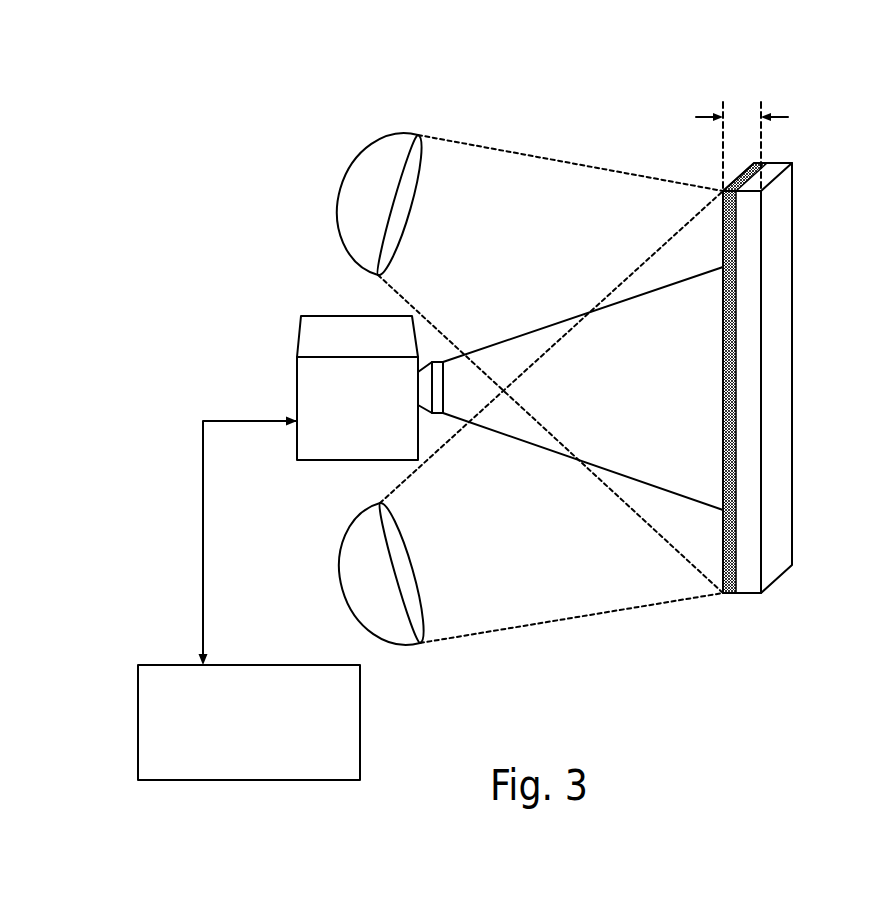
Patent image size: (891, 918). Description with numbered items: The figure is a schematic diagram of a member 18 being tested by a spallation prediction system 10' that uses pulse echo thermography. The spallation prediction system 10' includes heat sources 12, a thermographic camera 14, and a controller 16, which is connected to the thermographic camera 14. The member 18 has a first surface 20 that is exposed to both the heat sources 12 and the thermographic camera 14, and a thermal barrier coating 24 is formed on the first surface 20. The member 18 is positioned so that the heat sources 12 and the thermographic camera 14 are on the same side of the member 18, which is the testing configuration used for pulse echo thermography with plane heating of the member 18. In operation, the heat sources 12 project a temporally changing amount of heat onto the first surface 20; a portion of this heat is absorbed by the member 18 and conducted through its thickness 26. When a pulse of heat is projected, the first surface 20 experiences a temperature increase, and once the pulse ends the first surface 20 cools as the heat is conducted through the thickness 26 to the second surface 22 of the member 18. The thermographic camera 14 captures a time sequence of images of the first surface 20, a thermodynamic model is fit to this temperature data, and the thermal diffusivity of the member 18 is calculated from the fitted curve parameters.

The spallation prediction system 10' is at (670, 64).
The heat source 12 is at (338, 192).
The thermographic camera 14 is at (307, 460).
The controller 16 is at (236, 759).
The member 18 is at (747, 419).
The first surface 20 is at (700, 407).
The second surface 22 is at (798, 392).
The thermal barrier coating 24 is at (712, 530).
The thickness 26 is at (774, 113).